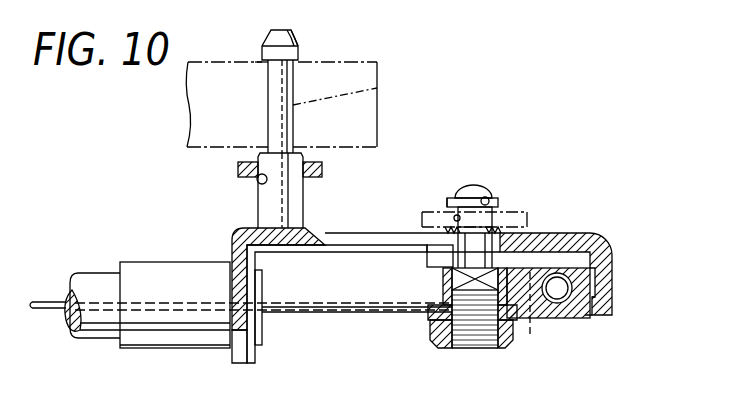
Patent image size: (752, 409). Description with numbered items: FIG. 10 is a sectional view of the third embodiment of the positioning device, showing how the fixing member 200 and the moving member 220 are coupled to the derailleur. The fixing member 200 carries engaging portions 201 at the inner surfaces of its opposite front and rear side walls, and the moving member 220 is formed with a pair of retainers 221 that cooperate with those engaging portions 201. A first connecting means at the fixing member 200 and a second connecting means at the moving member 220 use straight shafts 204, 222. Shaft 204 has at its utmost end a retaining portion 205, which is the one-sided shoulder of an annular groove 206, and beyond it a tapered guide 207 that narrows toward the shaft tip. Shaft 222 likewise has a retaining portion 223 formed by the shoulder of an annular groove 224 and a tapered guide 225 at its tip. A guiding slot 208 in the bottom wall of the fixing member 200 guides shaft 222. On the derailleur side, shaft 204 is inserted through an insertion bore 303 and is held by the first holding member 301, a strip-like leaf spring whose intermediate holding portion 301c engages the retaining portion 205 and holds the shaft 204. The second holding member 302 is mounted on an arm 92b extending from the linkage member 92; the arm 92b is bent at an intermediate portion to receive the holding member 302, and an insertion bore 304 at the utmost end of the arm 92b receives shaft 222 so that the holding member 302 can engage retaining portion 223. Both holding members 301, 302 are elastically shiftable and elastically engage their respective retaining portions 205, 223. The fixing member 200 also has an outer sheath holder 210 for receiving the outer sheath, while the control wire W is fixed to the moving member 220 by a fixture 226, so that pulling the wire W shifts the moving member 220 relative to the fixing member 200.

The fixing member 200 is at (613, 256).
The engaging portions 201 is at (532, 338).
The straight shaft 204 is at (262, 207).
The retaining portion 205 is at (262, 64).
The annular groove 206 is at (270, 113).
The tapered guide 207 is at (292, 37).
The guiding slot 208 is at (352, 244).
The outer sheath holder 210 is at (195, 349).
The moving member 220 is at (613, 304).
The retainers 221 is at (560, 305).
The straight shaft 222 is at (473, 185).
The retaining portion 223 is at (487, 197).
The annular groove 224 is at (462, 197).
The tapered guide 225 is at (483, 192).
The fixture 226 is at (438, 349).
The first holding member 301 is at (378, 62).
The holding portion 301c is at (378, 88).
The second holding member 302 is at (448, 202).
The insertion bore 303 is at (258, 182).
The insertion bore 304 is at (452, 220).
The linkage member 92 is at (238, 168).
The arm 92b is at (528, 218).
The control wire W is at (350, 313).